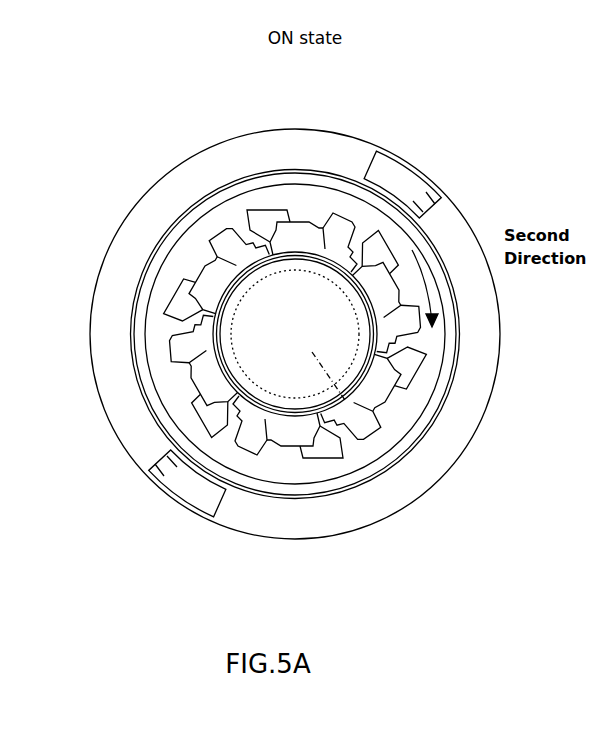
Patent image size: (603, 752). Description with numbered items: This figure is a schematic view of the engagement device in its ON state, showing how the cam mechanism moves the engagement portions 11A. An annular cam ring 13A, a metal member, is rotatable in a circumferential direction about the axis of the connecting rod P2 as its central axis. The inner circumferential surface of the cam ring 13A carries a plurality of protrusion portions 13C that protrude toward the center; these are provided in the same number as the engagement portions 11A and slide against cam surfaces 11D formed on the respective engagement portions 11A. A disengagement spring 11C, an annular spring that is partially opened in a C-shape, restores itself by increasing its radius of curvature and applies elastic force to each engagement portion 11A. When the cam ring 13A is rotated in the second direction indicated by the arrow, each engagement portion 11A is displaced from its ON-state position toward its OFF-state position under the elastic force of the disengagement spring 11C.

The engagement portion 11A is at (334, 252).
The disengagement spring 11C is at (330, 455).
The cam surface 11D is at (232, 252).
The cam ring 13A is at (403, 283).
The protrusion portion 13C is at (305, 228).
The connecting rod P2 is at (345, 400).